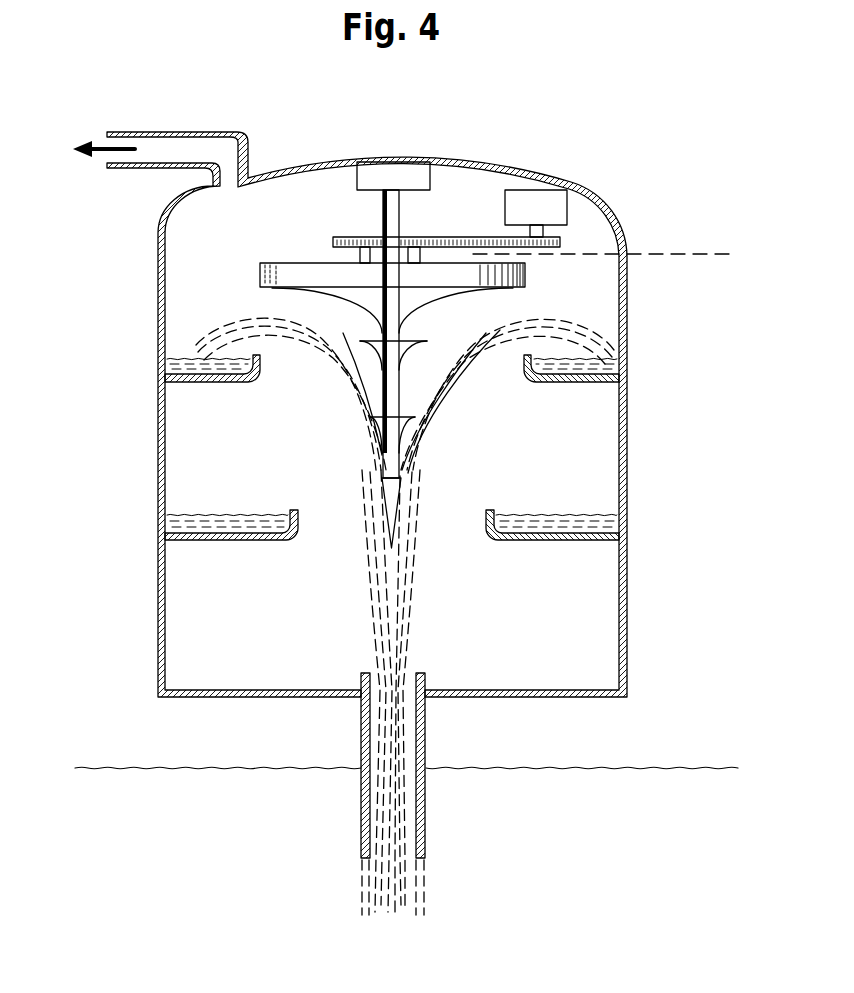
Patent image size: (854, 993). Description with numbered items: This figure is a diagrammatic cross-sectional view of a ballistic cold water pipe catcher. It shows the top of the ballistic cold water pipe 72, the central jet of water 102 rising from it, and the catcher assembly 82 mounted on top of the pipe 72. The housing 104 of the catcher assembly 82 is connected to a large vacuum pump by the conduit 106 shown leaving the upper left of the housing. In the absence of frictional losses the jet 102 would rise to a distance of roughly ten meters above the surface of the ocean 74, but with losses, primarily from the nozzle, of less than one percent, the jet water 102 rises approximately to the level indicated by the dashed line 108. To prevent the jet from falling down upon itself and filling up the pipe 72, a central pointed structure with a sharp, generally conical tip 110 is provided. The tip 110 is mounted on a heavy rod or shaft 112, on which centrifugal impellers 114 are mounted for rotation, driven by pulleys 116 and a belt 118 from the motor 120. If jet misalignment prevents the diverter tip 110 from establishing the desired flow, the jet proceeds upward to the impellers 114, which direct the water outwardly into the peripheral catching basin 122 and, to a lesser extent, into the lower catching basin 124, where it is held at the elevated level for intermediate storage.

The catcher assembly 82 is at (392, 381).
The housing 104 is at (385, 381).
The conduit 106 is at (178, 145).
The dashed line 108 is at (731, 256).
The conical tip 110 is at (390, 500).
The shaft 112 is at (392, 207).
The centrifugal impellers 114 is at (362, 303).
The pulleys 116 is at (517, 237).
The belt 118 is at (497, 247).
The motor 120 is at (558, 197).
The peripheral catching basin 122 is at (248, 383).
The lower catching basin 124 is at (252, 541).
The ballistic cold water pipe 72 is at (425, 806).
The surface of the ocean 74 is at (620, 767).
The central jet of water 102 is at (393, 825).